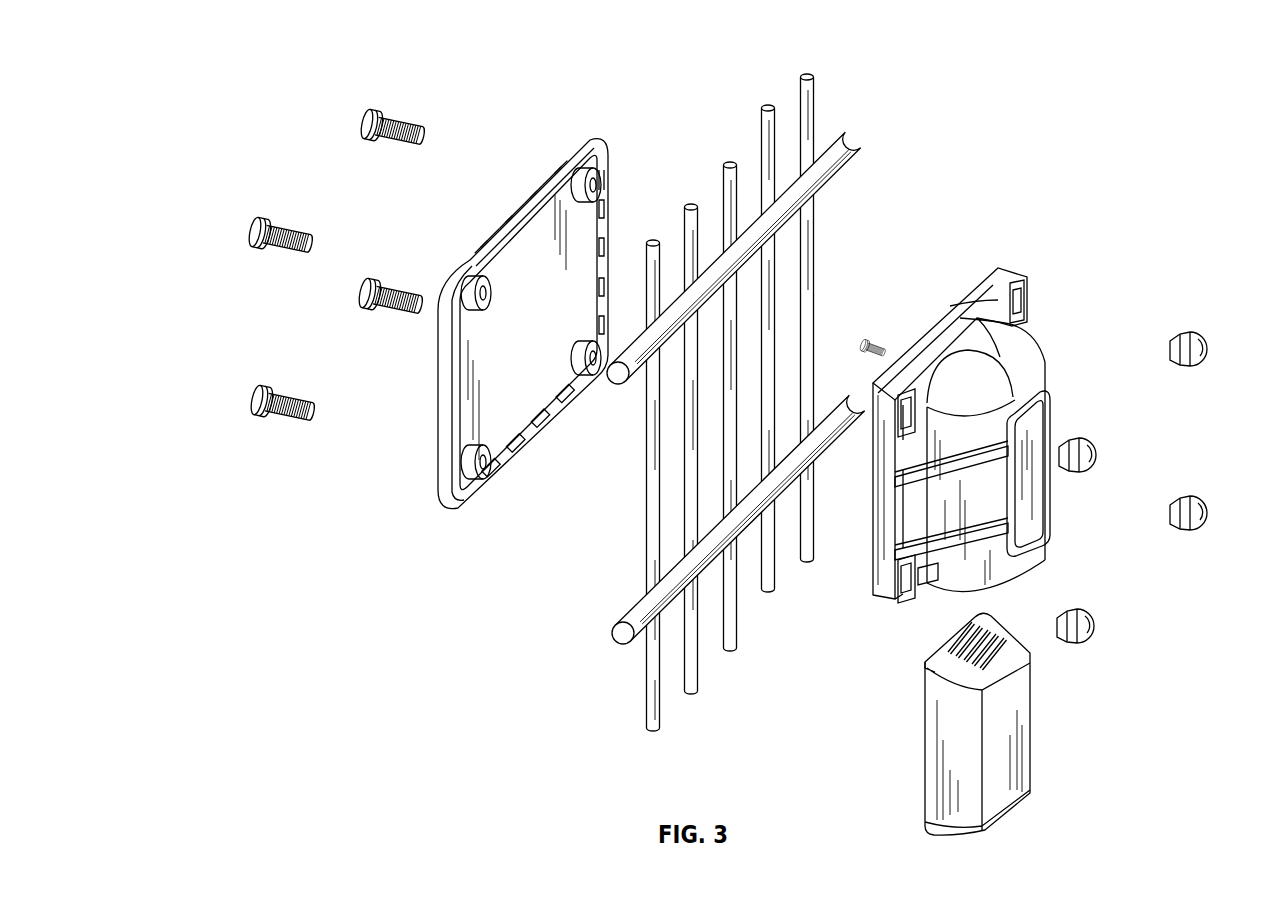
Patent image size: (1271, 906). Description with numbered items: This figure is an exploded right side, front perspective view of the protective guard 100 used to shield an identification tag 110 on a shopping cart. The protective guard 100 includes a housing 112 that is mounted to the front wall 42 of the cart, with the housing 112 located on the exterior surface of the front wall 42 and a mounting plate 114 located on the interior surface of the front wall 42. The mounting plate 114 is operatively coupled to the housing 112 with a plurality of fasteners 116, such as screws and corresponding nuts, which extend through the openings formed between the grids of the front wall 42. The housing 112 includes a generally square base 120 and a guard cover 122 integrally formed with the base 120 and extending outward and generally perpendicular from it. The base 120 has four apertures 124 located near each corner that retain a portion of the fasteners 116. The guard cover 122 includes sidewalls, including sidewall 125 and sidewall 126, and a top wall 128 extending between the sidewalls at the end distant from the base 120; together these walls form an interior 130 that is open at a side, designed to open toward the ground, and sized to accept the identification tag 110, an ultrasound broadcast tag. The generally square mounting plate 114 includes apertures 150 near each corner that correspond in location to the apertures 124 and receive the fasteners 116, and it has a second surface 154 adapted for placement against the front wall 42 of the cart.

The protective guard 100 is at (200, 62).
The front wall 42 is at (817, 107).
The identification tag 110 is at (1020, 718).
The housing 112 is at (985, 292).
The mounting plate 114 is at (438, 396).
The fasteners 116 is at (358, 122).
The base 120 is at (880, 545).
The guard cover 122 is at (1026, 348).
The apertures 124 is at (1026, 292).
The sidewall 125 is at (936, 575).
The sidewall 126 is at (1052, 385).
The top wall 128 is at (1000, 357).
The interior 130 is at (1030, 572).
The apertures 150 is at (583, 175).
The second surface 154 is at (608, 210).